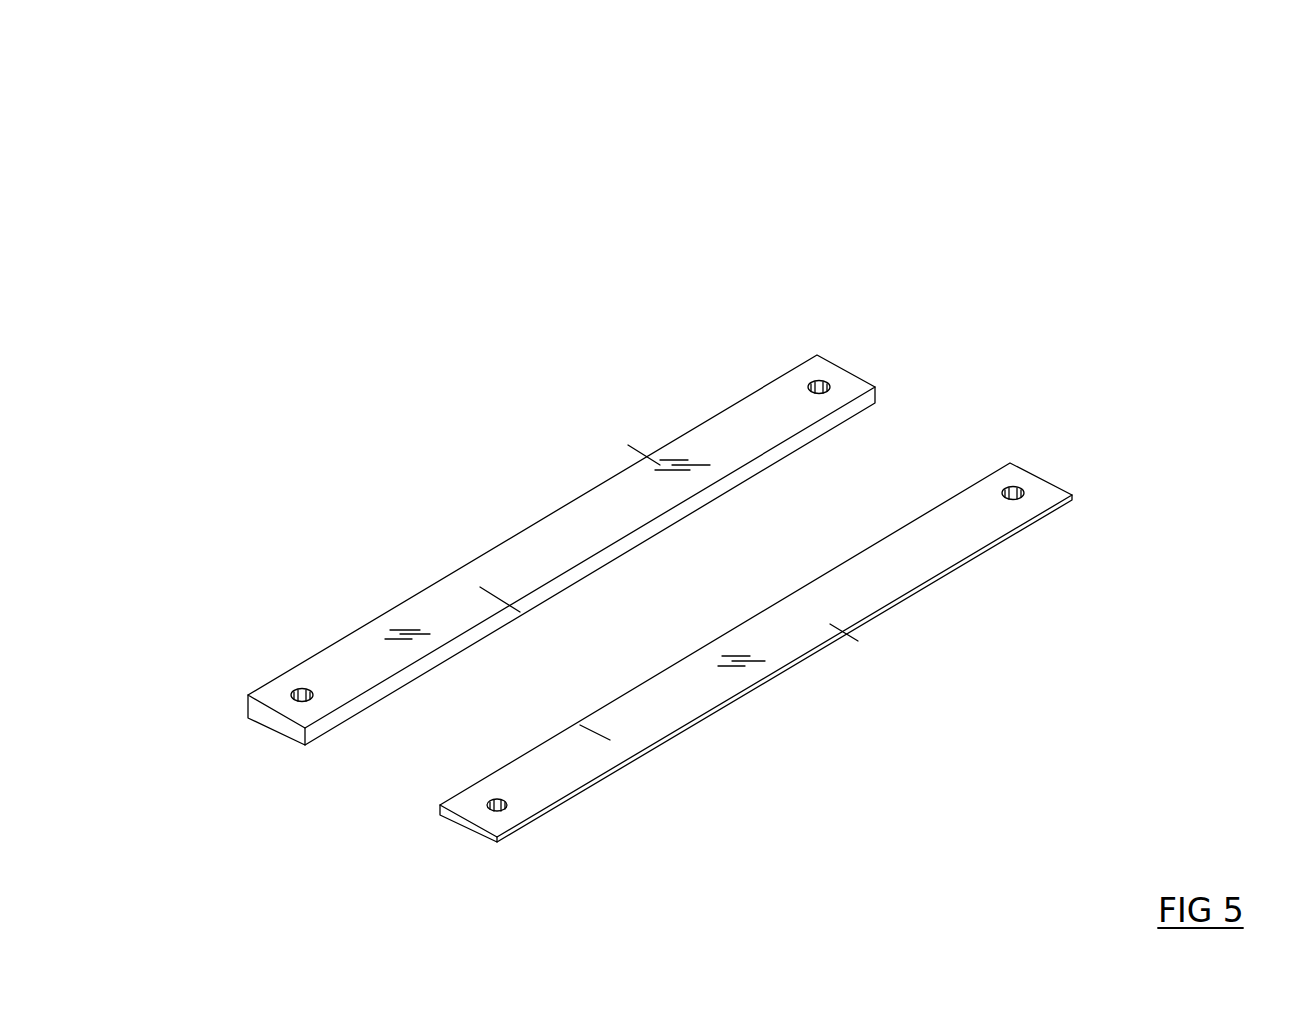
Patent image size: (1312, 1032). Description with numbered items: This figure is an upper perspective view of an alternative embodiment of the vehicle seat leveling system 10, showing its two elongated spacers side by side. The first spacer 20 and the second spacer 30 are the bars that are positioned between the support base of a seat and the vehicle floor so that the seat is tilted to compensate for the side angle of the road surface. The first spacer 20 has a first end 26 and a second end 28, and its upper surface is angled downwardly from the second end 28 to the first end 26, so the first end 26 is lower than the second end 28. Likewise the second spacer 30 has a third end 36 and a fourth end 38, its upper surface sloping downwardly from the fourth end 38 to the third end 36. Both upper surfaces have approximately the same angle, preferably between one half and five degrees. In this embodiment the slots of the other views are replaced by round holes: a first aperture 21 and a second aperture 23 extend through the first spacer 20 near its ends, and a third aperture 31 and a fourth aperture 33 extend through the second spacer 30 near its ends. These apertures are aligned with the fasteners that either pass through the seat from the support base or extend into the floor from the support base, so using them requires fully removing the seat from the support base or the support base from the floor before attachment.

The vehicle seat leveling system 10 is at (1172, 142).
The first spacer 20 is at (980, 562).
The first aperture 21 is at (1013, 488).
The second aperture 23 is at (488, 806).
The first end 26 is at (840, 633).
The second end 28 is at (587, 717).
The second spacer 30 is at (741, 384).
The third aperture 31 is at (822, 381).
The fourth aperture 33 is at (296, 682).
The third end 36 is at (513, 600).
The fourth end 38 is at (643, 458).